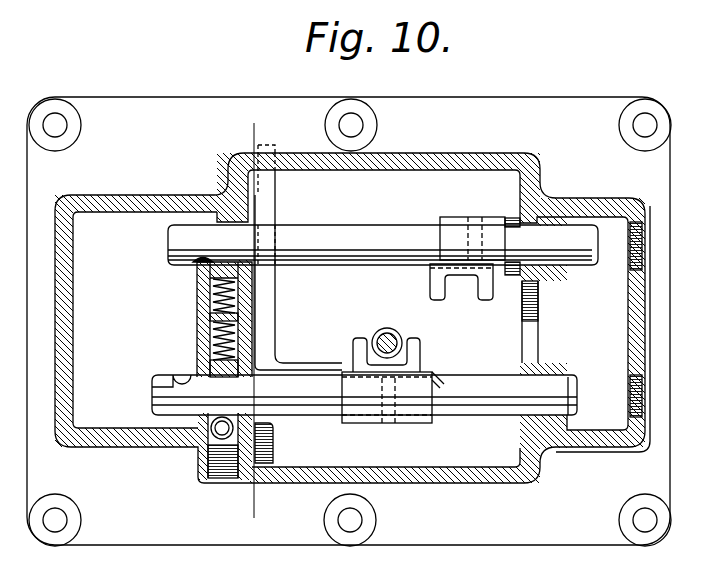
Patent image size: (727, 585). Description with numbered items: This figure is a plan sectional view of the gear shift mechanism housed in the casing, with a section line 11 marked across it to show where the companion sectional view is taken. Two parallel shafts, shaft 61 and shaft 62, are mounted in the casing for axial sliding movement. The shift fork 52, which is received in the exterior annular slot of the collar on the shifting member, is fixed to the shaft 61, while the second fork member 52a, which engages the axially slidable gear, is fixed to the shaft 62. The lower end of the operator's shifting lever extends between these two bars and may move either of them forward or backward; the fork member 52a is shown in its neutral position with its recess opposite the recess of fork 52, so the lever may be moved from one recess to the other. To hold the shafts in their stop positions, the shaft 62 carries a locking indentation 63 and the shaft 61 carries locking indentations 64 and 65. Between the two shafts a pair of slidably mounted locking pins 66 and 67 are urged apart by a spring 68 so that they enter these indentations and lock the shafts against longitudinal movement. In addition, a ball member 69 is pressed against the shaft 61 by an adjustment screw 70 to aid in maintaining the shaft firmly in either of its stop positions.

The section line 11 is at (247, 133).
The shift fork 52 is at (273, 299).
The second fork member 52a is at (455, 220).
The shaft 61 is at (470, 382).
The shaft 62 is at (356, 232).
The locking indentation 63 is at (190, 262).
The locking indentation 64 is at (173, 385).
The locking indentation 65 is at (218, 380).
The locking pin 66 is at (200, 340).
The locking pin 67 is at (205, 292).
The spring 68 is at (208, 317).
The ball member 69 is at (197, 446).
The adjustment screw 70 is at (215, 461).